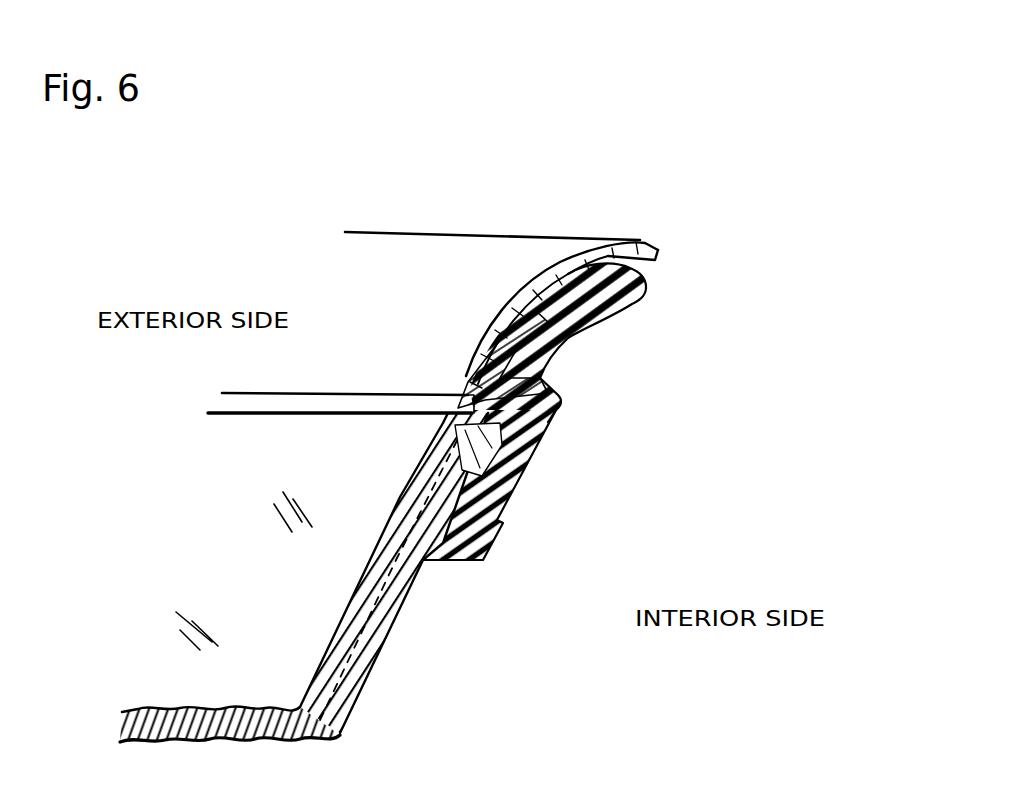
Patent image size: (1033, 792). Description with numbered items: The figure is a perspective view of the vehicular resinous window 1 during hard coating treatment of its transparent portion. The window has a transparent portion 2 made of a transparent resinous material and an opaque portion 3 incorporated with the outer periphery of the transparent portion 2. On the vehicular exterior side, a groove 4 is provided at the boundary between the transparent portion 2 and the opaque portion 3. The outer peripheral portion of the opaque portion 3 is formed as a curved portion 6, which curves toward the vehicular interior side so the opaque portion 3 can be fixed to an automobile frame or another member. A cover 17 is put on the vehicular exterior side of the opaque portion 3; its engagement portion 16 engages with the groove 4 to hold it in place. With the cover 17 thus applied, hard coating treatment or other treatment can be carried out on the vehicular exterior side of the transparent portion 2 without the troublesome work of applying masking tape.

The vehicular resinous window 1 is at (693, 287).
The transparent portion 2 is at (350, 667).
The opaque portion 3 is at (612, 303).
The groove 4 is at (394, 409).
The curved portion 6 is at (650, 283).
The engagement portion 16 is at (562, 408).
The cover 17 is at (470, 256).